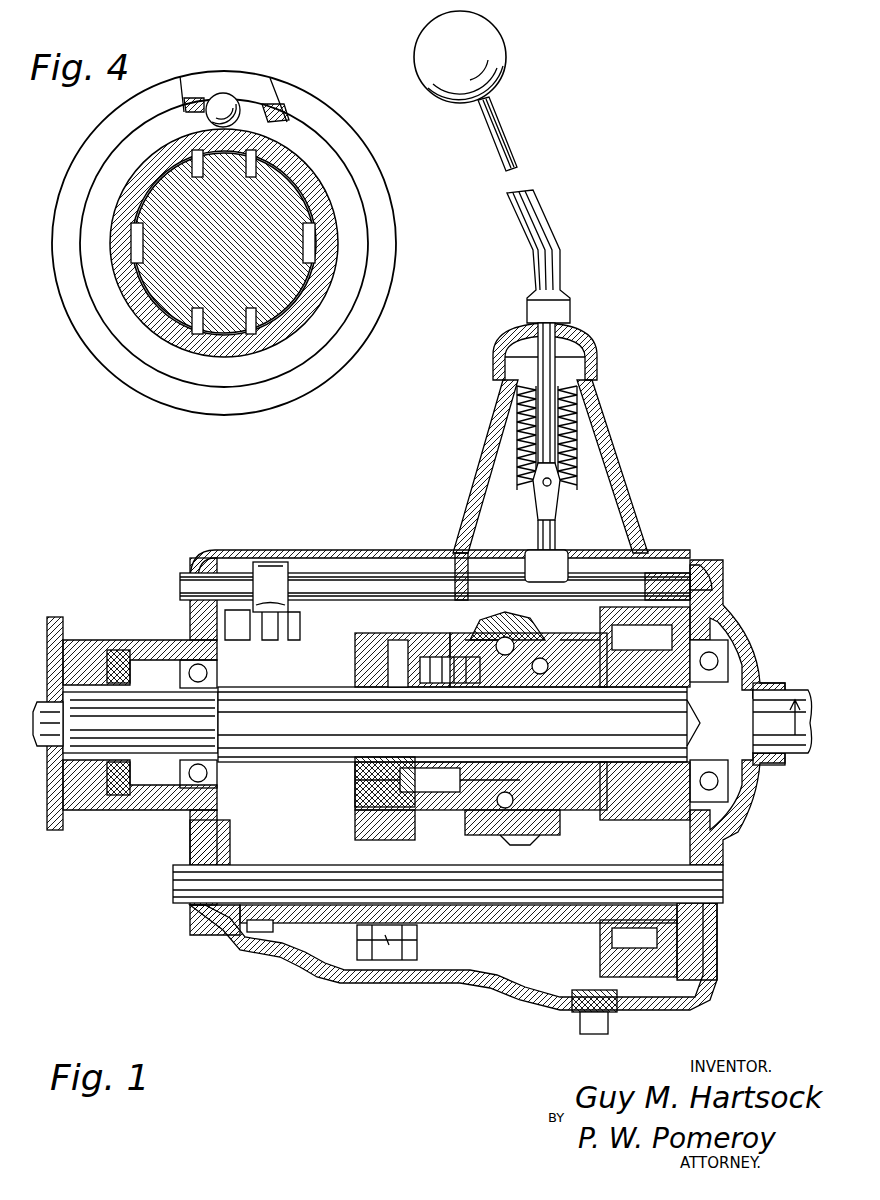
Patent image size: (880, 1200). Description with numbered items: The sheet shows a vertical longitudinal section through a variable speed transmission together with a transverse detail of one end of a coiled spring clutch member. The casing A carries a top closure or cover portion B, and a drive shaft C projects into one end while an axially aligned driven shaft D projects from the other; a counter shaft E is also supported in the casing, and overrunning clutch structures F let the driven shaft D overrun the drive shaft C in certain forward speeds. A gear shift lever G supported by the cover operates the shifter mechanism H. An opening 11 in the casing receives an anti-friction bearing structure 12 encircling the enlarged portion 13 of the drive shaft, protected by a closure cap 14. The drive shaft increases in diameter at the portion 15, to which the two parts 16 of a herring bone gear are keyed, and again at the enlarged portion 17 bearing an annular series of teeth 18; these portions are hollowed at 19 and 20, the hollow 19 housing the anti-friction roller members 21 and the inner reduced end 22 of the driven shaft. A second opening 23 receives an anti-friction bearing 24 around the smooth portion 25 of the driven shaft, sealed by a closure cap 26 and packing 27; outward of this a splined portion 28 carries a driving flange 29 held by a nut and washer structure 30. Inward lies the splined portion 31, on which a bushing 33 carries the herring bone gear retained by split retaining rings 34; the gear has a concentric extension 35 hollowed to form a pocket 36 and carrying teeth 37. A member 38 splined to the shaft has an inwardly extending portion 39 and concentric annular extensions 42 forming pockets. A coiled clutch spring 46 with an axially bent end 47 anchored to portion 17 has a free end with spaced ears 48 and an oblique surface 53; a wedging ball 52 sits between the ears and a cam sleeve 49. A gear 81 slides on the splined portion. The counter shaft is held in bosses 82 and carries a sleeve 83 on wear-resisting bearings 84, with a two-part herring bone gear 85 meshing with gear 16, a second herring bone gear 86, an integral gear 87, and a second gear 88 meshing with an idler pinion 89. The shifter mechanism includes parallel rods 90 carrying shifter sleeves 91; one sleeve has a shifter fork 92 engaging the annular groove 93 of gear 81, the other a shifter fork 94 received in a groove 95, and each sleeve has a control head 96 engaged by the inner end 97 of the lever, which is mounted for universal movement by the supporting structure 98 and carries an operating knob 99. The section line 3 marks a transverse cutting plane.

In FIG. 1, the opening 11 is at (725, 632).
In FIG. 1, the anti-friction bearing structure 12 is at (730, 645).
In FIG. 1, the enlarged portion of the drive shaft 13 is at (775, 684).
In FIG. 1, the closure cap 14 is at (760, 668).
In FIG. 1, the portion of the drive shaft 15 is at (725, 612).
In FIG. 1, the herring bone gear parts 16 is at (700, 600).
In FIG. 1, the enlarged portion of the drive shaft 17 is at (705, 588).
In FIG. 1, the annular series of teeth 18 is at (680, 580).
In FIG. 1, the hollowed out portion 19 is at (728, 840).
In FIG. 1, the hollowed out portion 20 is at (625, 800).
In FIG. 1, the anti-friction roller members 21 is at (738, 826).
In FIG. 1, the inner reduced end of the driven shaft 22 is at (459, 724).
In FIG. 1, the second opening 23 is at (196, 662).
In FIG. 1, the anti-friction bearing 24 is at (190, 655).
In FIG. 1, the smooth portion of the driven shaft 25 is at (170, 648).
In FIG. 1, the closure cap 26 is at (145, 650).
In FIG. 1, the packing 27 is at (112, 655).
In FIG. 1, the splined portion 28 is at (45, 746).
In FIG. 1, the driving flange 29 is at (60, 828).
In FIG. 1, the nut and washer structure 30 is at (40, 735).
In FIG. 4, the splined portion 31 is at (162, 254).
In FIG. 1, the splined portion 31 is at (225, 690).
In FIG. 1, the bushing or bearing 33 is at (385, 640).
In FIG. 1, the split retaining rings 34 is at (420, 640).
In FIG. 1, the concentric extension 35 is at (440, 630).
In FIG. 1, the pocket 36 is at (460, 638).
In FIG. 1, the set of teeth 37 is at (470, 635).
In FIG. 1, the member 38 is at (500, 638).
In FIG. 1, the inwardly extending portion 39 is at (535, 658).
In FIG. 1, the concentric annular extensions 42 is at (495, 620).
In FIG. 4, the coiled clutch spring 46 is at (94, 358).
In FIG. 1, the axially bent end 47 is at (712, 800).
In FIG. 4, the spaced ears 48 is at (183, 103).
In FIG. 4, the cam sleeve 49 is at (122, 202).
In FIG. 4, the wedging or expanding ball 52 is at (227, 94).
In FIG. 4, the longitudinally extending surface 53 is at (248, 82).
In FIG. 1, the gear 81 is at (300, 800).
In FIG. 1, the bosses 82 is at (205, 922).
In FIG. 1, the sleeve 83 is at (470, 985).
In FIG. 1, the wear-resisting bearings 84 is at (290, 935).
In FIG. 1, the two-part herring bone gear 85 is at (630, 975).
In FIG. 1, the second two-part herring bone gear 86 is at (395, 960).
In FIG. 1, the gear 87 is at (328, 930).
In FIG. 1, the second gear 88 is at (260, 928).
In FIG. 1, the idler pinion 89 is at (190, 852).
In FIG. 1, the parallel rods 90 is at (200, 578).
In FIG. 1, the shifter sleeve 91 is at (302, 578).
In FIG. 1, the shifter fork 92 is at (262, 625).
In FIG. 1, the annular groove 93 is at (323, 782).
In FIG. 1, the shifter fork 94 is at (476, 568).
In FIG. 1, the groove 95 is at (547, 438).
In FIG. 1, the control head 96 is at (565, 556).
In FIG. 1, the inner end of the gear shift lever 97 is at (558, 514).
In FIG. 1, the supporting structure 98 is at (597, 360).
In FIG. 1, the operating knob 99 is at (508, 60).
In FIG. 1, the casing A is at (276, 975).
In FIG. 1, the top closure or cover portion B is at (362, 610).
In FIG. 1, the drive shaft C is at (790, 758).
In FIG. 4, the driven or transmission shaft D is at (150, 290).
In FIG. 1, the counter shaft E is at (172, 892).
In FIG. 1, the overrunning clutch structures F is at (440, 640).
In FIG. 1, the gear shift lever G is at (562, 247).
In FIG. 1, the shifter mechanism H is at (486, 548).
In FIG. 1, the section line 3 is at (519, 559).